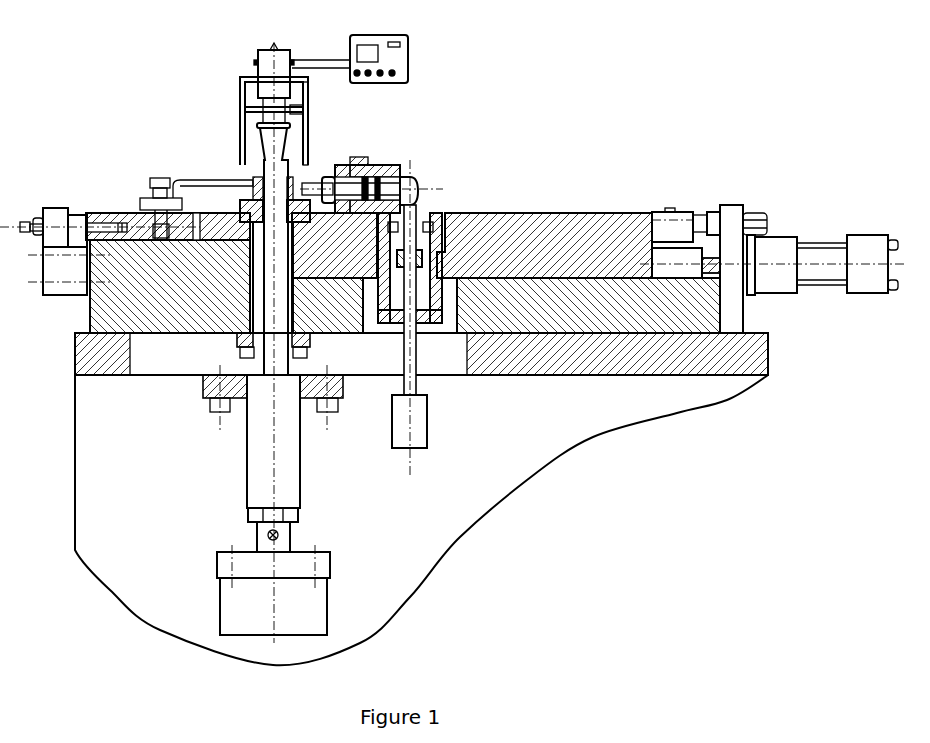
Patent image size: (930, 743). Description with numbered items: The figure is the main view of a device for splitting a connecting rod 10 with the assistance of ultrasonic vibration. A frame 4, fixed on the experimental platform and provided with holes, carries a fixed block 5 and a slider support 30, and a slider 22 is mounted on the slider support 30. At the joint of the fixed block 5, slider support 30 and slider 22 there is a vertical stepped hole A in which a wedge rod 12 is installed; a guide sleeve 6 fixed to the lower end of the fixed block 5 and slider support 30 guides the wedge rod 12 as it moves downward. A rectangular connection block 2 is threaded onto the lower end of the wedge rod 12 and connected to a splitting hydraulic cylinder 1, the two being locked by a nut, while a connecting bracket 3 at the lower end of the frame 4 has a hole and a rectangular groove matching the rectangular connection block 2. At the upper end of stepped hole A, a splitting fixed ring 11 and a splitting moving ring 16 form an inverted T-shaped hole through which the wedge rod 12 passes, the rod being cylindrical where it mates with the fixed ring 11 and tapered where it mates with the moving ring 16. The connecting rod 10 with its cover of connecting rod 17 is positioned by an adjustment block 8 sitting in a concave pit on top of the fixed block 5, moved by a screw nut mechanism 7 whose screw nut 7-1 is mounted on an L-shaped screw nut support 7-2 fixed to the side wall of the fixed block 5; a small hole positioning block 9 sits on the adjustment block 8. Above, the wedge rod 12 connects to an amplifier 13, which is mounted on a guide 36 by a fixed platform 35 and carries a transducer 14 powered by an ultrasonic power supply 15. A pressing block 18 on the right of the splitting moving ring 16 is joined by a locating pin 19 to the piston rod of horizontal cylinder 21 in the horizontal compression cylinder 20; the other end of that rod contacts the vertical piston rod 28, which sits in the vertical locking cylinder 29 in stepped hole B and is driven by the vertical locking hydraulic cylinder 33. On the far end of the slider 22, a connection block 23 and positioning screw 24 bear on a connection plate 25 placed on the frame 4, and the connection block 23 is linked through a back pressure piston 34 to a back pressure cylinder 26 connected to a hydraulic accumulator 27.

The splitting hydraulic cylinder 1 is at (237, 597).
The rectangular connection block 2 is at (260, 467).
The connecting bracket 3 is at (207, 395).
The frame 4 is at (85, 363).
The fixed block 5 is at (122, 295).
The guide sleeve 6 is at (238, 340).
The screw nut mechanism 7 is at (25, 222).
The screw nut 7-1 is at (87, 212).
The screw nut support 7-2 is at (50, 263).
The adjustment block 8 is at (93, 215).
The small hole positioning block 9 is at (157, 178).
The connecting rod 10 is at (182, 186).
The splitting fixed ring 11 is at (248, 210).
The wedge rod 12 is at (265, 150).
The amplifier 13 is at (258, 108).
The transducer 14 is at (270, 77).
The ultrasonic power supply 15 is at (398, 58).
The splitting moving ring 16 is at (296, 158).
The cover of connecting rod 17 is at (305, 184).
The pressing block 18 is at (322, 184).
The locating pin 19 is at (360, 168).
The horizontal compression cylinder 20 is at (380, 184).
The piston rod of horizontal cylinder 21 is at (405, 178).
The slider 22 is at (577, 248).
The connection block 23 is at (663, 257).
The positioning screw 24 is at (698, 223).
The connection plate 25 is at (730, 217).
The back pressure cylinder 26 is at (775, 248).
The hydraulic accumulator 27 is at (858, 258).
The piston rod 28 is at (408, 313).
The vertical locking cylinder 29 is at (422, 305).
The slider support 30 is at (530, 315).
The vertical locking hydraulic cylinder 33 is at (418, 438).
The back pressure piston 34 is at (722, 273).
The fixed platform 35 is at (292, 105).
The guide 36 is at (307, 86).